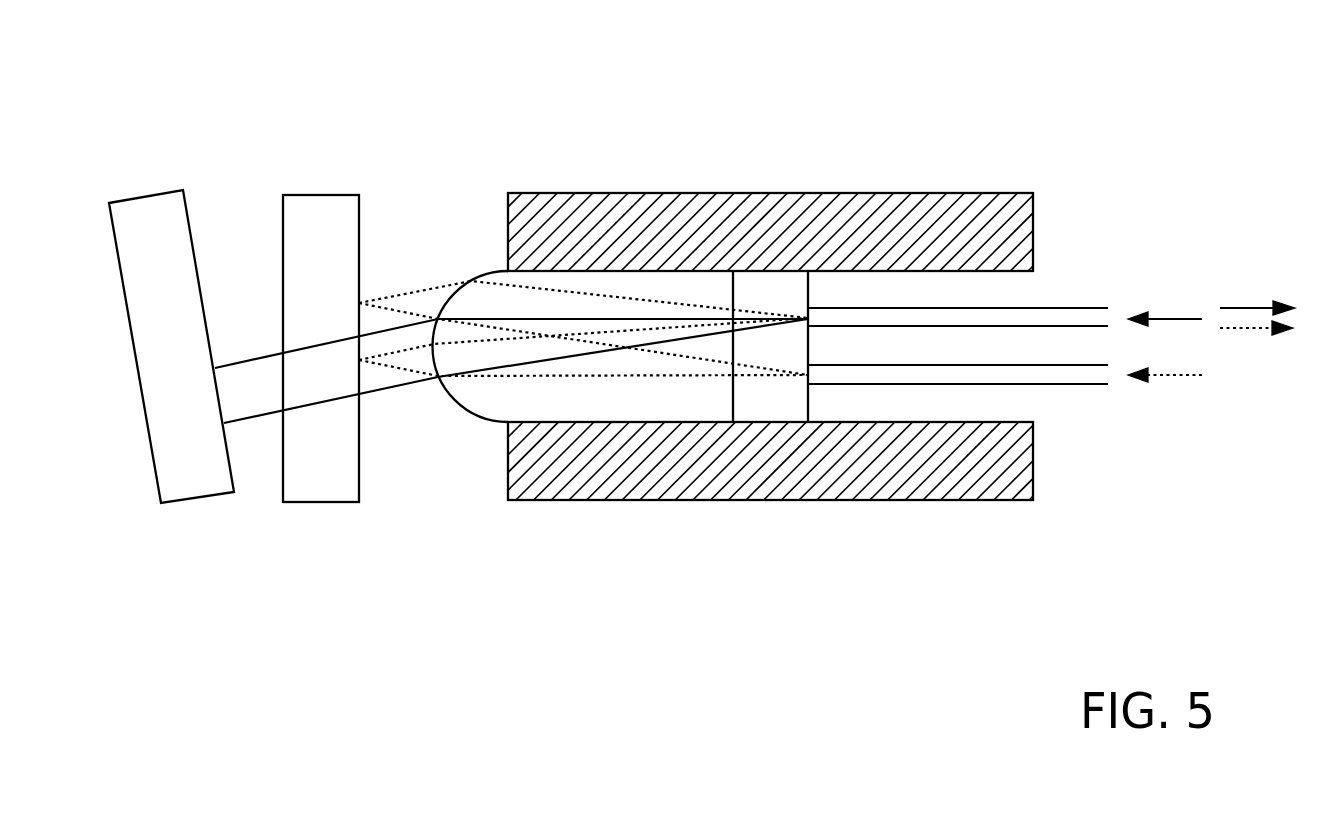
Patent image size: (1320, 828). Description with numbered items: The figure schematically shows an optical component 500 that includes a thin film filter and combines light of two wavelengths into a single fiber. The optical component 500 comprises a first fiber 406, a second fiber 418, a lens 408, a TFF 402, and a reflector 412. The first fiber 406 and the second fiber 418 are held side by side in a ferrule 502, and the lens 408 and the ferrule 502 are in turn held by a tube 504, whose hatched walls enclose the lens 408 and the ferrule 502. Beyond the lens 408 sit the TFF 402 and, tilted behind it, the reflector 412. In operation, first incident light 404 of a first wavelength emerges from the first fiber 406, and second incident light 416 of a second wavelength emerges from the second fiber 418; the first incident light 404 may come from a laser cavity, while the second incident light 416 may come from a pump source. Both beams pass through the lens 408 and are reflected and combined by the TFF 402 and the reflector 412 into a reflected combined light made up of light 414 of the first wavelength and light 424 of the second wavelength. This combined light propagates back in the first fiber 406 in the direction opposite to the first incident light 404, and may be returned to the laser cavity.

The optical component 500 is at (358, 60).
The reflector 412 is at (187, 216).
The TFF 402 is at (342, 193).
The lens 408 is at (483, 423).
The tube 504 is at (863, 192).
The ferrule 502 is at (887, 356).
The first fiber 406 is at (1055, 306).
The second fiber 418 is at (1053, 386).
The first incident light 404 is at (1166, 319).
The light of λ1 414 is at (1240, 308).
The light of λ2 424 is at (1255, 332).
The second incident light 416 is at (1165, 375).